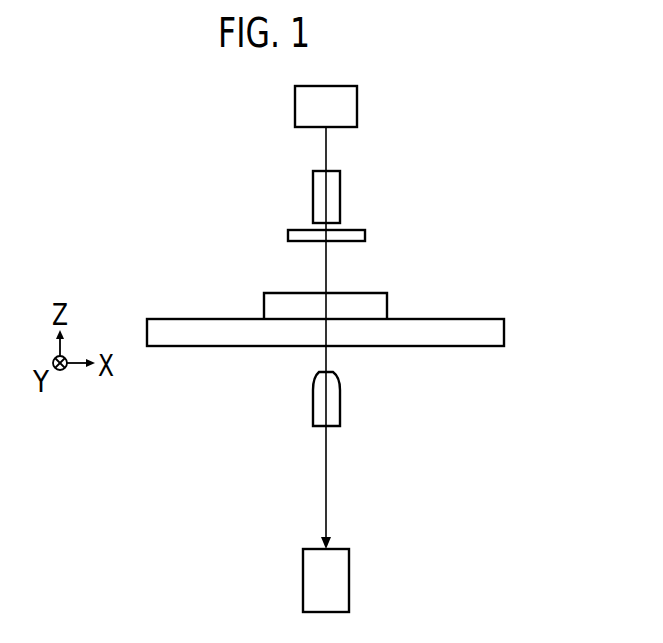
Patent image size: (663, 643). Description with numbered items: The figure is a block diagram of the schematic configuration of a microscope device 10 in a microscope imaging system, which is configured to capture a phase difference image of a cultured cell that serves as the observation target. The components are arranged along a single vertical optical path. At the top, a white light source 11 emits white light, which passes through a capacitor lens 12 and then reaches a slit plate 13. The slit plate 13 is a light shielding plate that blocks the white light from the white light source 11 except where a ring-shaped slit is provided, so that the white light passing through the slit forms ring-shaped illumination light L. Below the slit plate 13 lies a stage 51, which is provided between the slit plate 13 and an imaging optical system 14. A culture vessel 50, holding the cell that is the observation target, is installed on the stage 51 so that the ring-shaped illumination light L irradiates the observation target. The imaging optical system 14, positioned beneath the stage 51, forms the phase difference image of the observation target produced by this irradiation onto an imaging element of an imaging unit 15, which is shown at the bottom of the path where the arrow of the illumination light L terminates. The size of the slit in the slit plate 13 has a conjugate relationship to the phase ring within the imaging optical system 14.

The microscope device 10 is at (155, 137).
The white light source 11 is at (357, 96).
The capacitor lens 12 is at (340, 180).
The slit plate 13 is at (365, 236).
The ring-shaped illumination light L is at (327, 265).
The culture vessel 50 is at (387, 301).
The stage 51 is at (504, 330).
The imaging optical system 14 is at (340, 413).
The imaging unit 15 is at (349, 569).